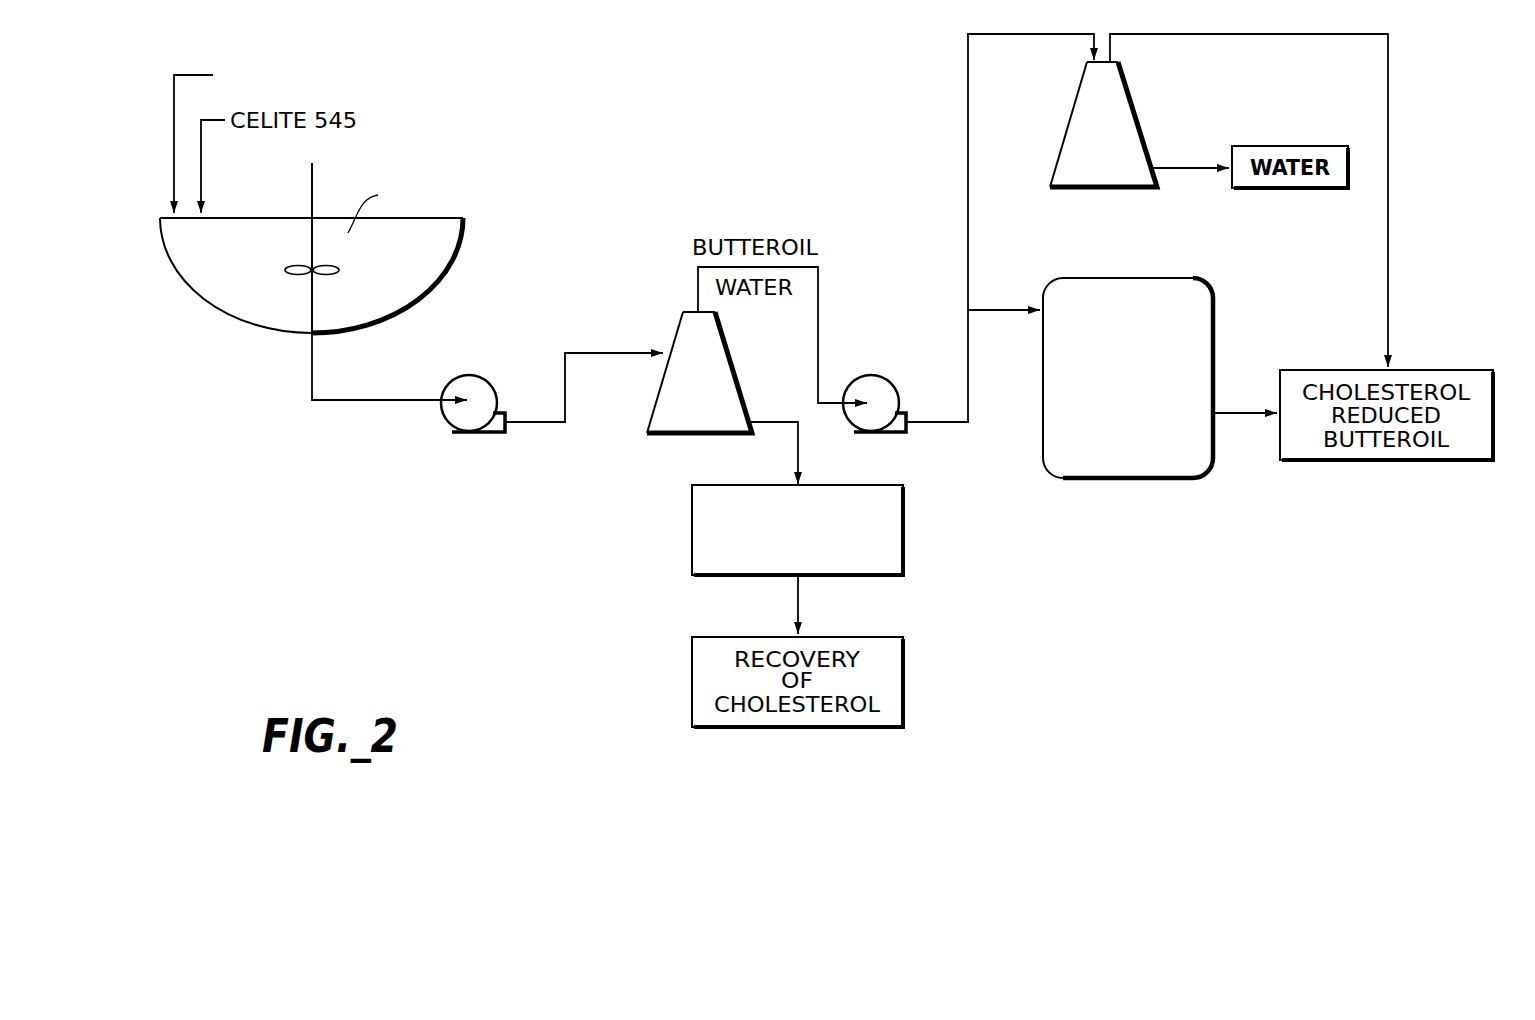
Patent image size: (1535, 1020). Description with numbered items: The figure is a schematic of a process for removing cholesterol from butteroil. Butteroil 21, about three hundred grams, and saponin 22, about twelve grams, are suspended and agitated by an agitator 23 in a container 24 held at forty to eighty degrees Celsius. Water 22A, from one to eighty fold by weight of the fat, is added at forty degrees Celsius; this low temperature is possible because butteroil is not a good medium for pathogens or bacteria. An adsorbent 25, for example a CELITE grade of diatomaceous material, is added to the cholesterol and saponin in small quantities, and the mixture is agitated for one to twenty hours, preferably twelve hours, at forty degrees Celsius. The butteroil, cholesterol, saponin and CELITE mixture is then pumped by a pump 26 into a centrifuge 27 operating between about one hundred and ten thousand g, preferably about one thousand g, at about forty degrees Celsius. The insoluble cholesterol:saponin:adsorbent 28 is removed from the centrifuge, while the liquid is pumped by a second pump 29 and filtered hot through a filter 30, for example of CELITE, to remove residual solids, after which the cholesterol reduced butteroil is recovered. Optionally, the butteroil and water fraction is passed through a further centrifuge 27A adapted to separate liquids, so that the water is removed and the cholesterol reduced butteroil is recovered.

The butteroil 21 is at (432, 248).
The saponin 22 is at (430, 262).
The water 22A is at (262, 139).
The agitator 23 is at (312, 172).
The container 24 is at (258, 328).
The adsorbent 25 is at (207, 275).
The pump 26 is at (445, 423).
The centrifuge 27 is at (650, 375).
The centrifuge 27A is at (1068, 107).
The insoluble cholesterol:saponin:adsorbent 28 is at (692, 540).
The pump 29 is at (883, 437).
The filter 30 is at (1043, 448).